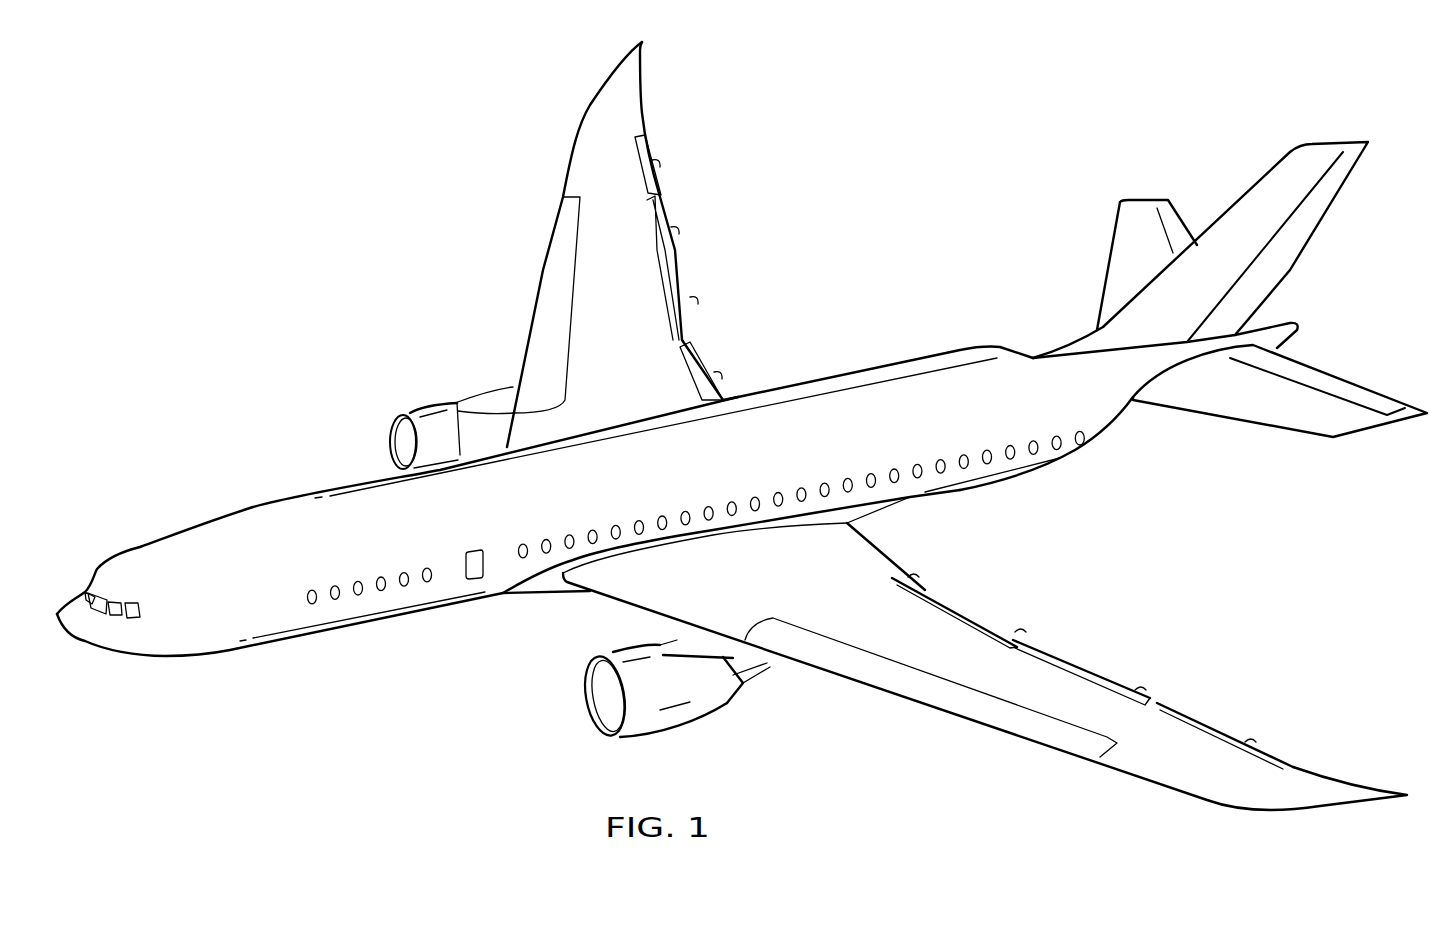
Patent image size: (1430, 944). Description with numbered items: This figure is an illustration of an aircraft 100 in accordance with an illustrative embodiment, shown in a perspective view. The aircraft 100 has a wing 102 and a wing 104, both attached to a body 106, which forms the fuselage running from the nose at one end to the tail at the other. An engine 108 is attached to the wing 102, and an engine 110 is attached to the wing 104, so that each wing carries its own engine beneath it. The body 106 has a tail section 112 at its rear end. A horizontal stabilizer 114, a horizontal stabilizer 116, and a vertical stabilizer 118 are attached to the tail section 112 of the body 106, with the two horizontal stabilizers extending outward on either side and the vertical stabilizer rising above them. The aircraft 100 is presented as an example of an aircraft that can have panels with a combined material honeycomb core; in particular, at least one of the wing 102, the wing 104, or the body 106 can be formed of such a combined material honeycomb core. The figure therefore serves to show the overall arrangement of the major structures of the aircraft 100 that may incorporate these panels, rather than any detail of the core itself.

The aircraft 100 is at (336, 194).
The wing 102 is at (573, 133).
The wing 104 is at (1287, 812).
The body 106 is at (243, 505).
The engine 108 is at (430, 398).
The engine 110 is at (678, 731).
The tail section 112 is at (1174, 477).
The horizontal stabilizer 114 is at (1107, 259).
The horizontal stabilizer 116 is at (1283, 427).
The vertical stabilizer 118 is at (1311, 230).